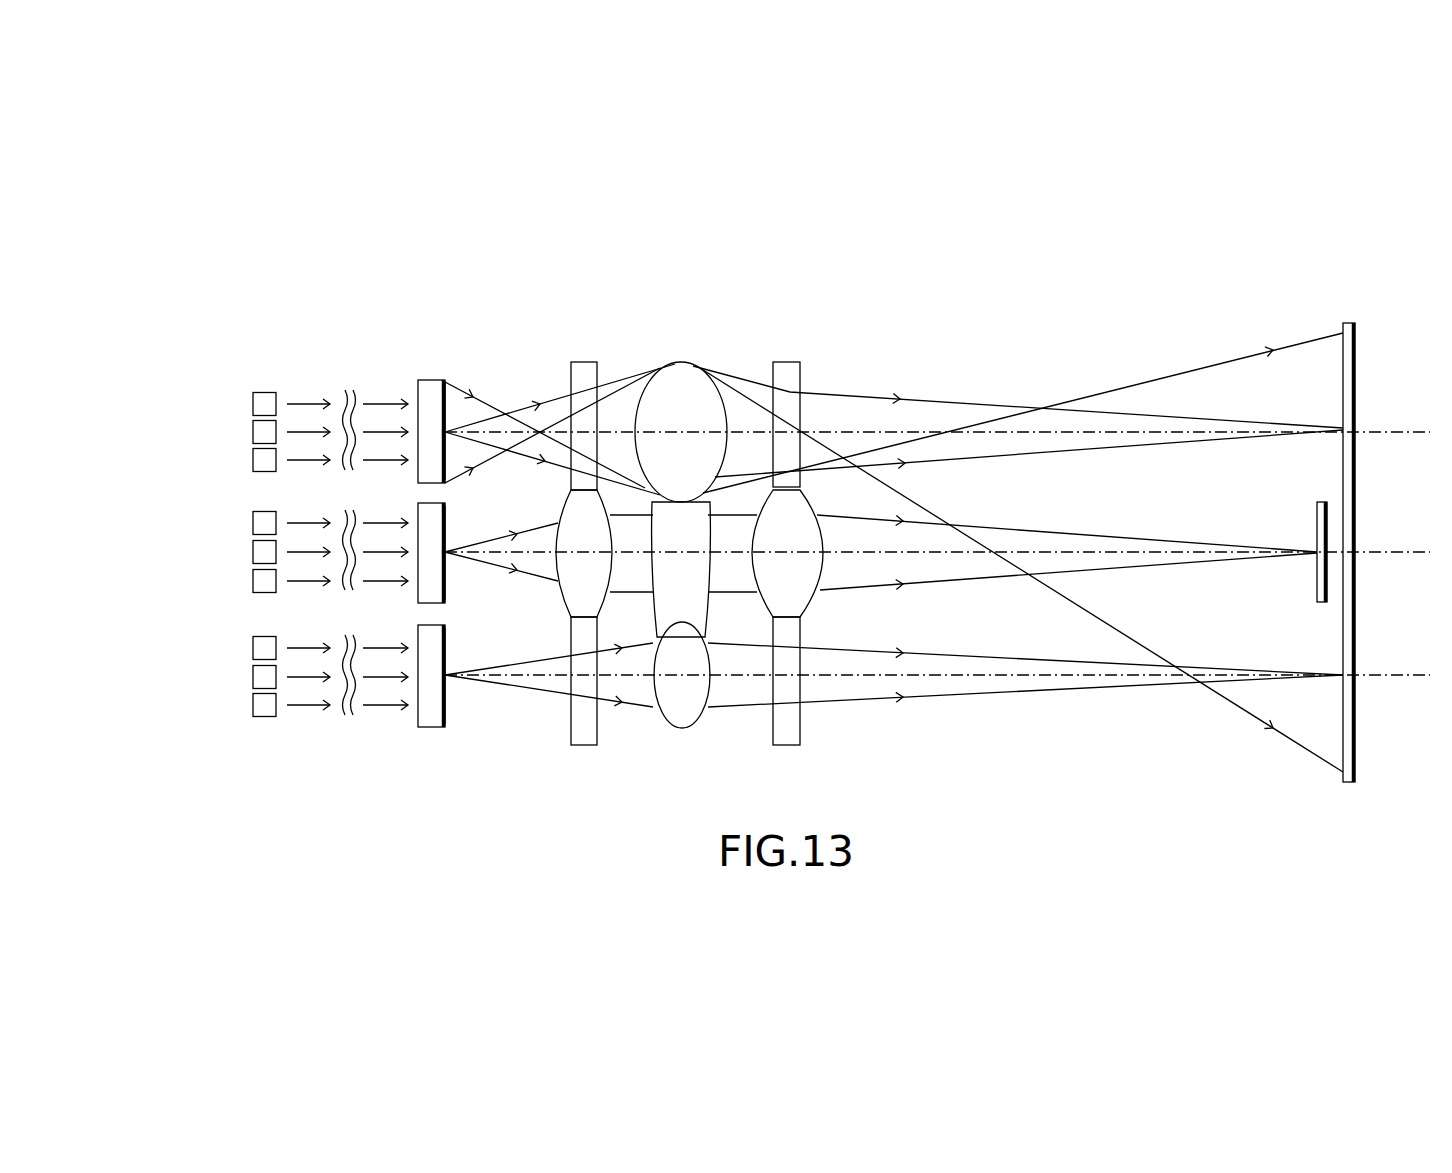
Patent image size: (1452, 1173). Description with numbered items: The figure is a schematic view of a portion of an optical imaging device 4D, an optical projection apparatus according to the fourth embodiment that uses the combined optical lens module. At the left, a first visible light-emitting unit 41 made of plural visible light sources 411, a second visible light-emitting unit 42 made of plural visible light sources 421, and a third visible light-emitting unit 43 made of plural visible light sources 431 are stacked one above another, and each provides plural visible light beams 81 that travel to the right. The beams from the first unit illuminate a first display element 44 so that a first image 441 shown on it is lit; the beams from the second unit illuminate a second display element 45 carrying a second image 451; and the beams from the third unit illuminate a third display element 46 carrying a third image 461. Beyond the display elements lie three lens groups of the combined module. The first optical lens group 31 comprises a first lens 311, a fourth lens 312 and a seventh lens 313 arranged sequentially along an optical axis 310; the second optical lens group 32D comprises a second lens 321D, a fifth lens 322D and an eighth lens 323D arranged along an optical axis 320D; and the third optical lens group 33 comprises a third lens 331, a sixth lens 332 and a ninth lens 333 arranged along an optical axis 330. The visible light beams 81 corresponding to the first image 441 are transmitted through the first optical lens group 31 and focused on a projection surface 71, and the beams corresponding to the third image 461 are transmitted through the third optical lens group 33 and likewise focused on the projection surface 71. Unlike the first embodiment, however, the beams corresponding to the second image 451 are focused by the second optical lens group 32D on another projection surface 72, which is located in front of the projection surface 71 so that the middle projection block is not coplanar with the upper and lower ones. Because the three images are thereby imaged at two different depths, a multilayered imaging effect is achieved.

The optical imaging device 4D is at (500, 263).
The first visible light-emitting unit 41 is at (202, 419).
The visible light source 411 is at (252, 430).
The second visible light-emitting unit 42 is at (202, 539).
The visible light source 421 is at (252, 516).
The third visible light-emitting unit 43 is at (202, 658).
The visible light source 431 is at (252, 640).
The visible light beam 81 is at (1225, 512).
The first display element 44 is at (459, 435).
The first image 441 is at (448, 466).
The second display element 45 is at (431, 557).
The second image 451 is at (448, 582).
The third display element 46 is at (440, 703).
The third image 461 is at (448, 703).
The first optical lens group 31 is at (750, 355).
The first lens 311 is at (583, 365).
The fourth lens 312 is at (683, 372).
The seventh lens 313 is at (790, 368).
The second optical lens group 32D is at (823, 425).
The second lens 321D is at (568, 578).
The fifth lens 322D is at (697, 567).
The eighth lens 323D is at (810, 574).
The third optical lens group 33 is at (890, 496).
The third lens 331 is at (582, 723).
The sixth lens 332 is at (680, 718).
The ninth lens 333 is at (783, 723).
The optical axis 310 is at (1380, 433).
The optical axis 320D is at (1387, 553).
The optical axis 330 is at (1387, 676).
The projection surface 71 is at (1356, 345).
The projection surface 72 is at (1310, 580).